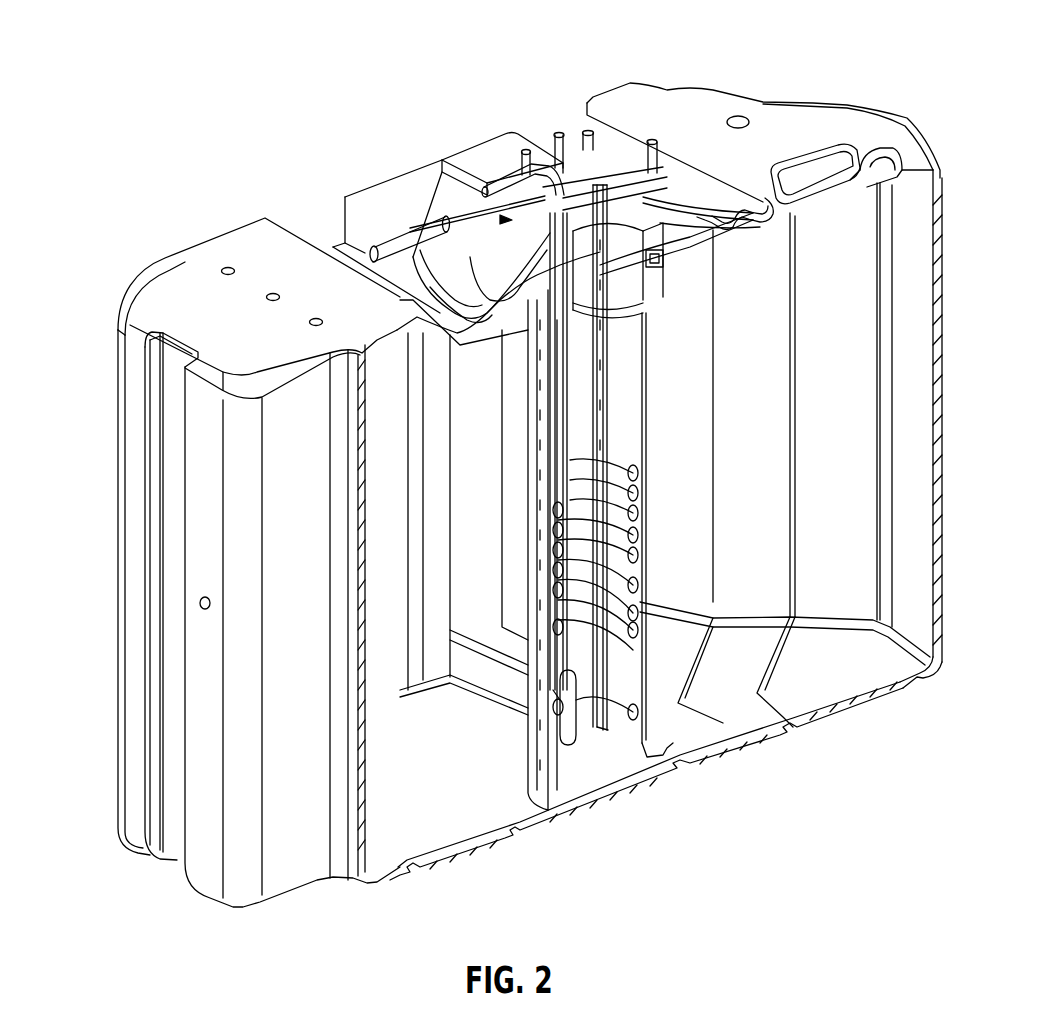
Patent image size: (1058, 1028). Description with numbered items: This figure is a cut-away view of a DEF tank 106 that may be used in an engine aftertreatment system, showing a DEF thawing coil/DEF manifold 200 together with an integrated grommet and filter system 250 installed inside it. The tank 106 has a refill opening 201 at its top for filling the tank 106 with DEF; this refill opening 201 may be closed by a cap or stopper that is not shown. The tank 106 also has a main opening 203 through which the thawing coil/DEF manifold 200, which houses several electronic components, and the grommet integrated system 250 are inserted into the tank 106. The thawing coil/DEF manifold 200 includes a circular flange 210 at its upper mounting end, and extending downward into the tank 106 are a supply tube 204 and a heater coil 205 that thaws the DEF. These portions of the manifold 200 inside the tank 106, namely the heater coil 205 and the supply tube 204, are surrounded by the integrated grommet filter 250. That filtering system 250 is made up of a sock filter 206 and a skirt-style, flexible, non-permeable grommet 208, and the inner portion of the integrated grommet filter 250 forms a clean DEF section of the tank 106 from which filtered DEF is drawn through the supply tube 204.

The DEF tank 106 is at (137, 300).
The DEF thawing coil/DEF manifold 200 is at (662, 70).
The integrated grommet and filter system 250 is at (662, 70).
The refill opening 201 is at (867, 157).
The main opening 203 is at (672, 255).
The supply tube 204 is at (603, 430).
The heater coil 205 is at (620, 492).
The sock filter 206 is at (533, 757).
The grommet 208 is at (497, 310).
The circular flange 210 is at (417, 173).